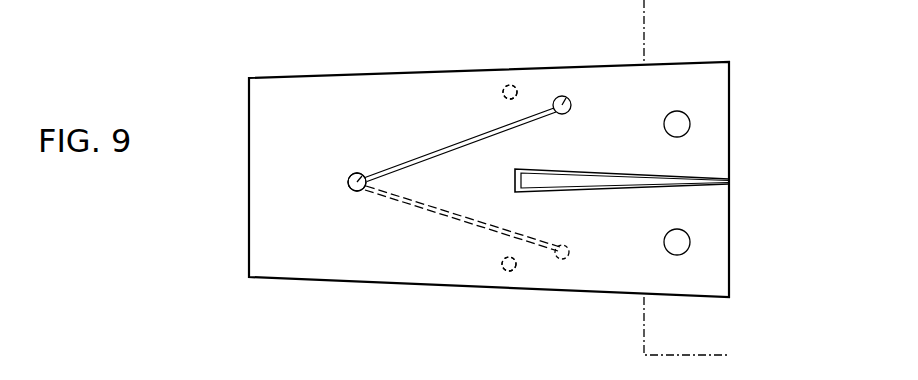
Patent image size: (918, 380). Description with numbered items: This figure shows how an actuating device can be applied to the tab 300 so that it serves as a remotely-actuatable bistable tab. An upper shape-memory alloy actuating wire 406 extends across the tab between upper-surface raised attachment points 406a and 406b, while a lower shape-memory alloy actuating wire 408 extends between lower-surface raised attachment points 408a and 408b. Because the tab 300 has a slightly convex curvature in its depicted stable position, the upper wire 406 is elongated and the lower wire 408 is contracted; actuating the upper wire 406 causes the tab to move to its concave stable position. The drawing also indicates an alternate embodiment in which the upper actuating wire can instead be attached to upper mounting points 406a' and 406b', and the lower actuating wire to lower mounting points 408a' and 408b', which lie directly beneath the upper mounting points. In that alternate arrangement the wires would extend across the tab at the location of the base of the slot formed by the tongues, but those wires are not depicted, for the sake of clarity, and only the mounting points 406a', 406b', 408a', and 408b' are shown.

The tab 300 is at (705, 77).
The upper shape-memory alloy actuating wire 406 is at (420, 155).
The upper-surface raised attachment point 406a is at (316, 178).
The upper-surface raised attachment point 406b is at (569, 62).
The upper mounting point 406a' is at (471, 54).
The upper mounting point 406b' is at (455, 311).
The lower shape-memory alloy actuating wire 408 is at (433, 210).
The lower-surface raised attachment point 408a is at (357, 182).
The lower-surface raised attachment point 408b is at (575, 304).
The lower mounting point 408a' is at (510, 92).
The lower mounting point 408b' is at (509, 264).